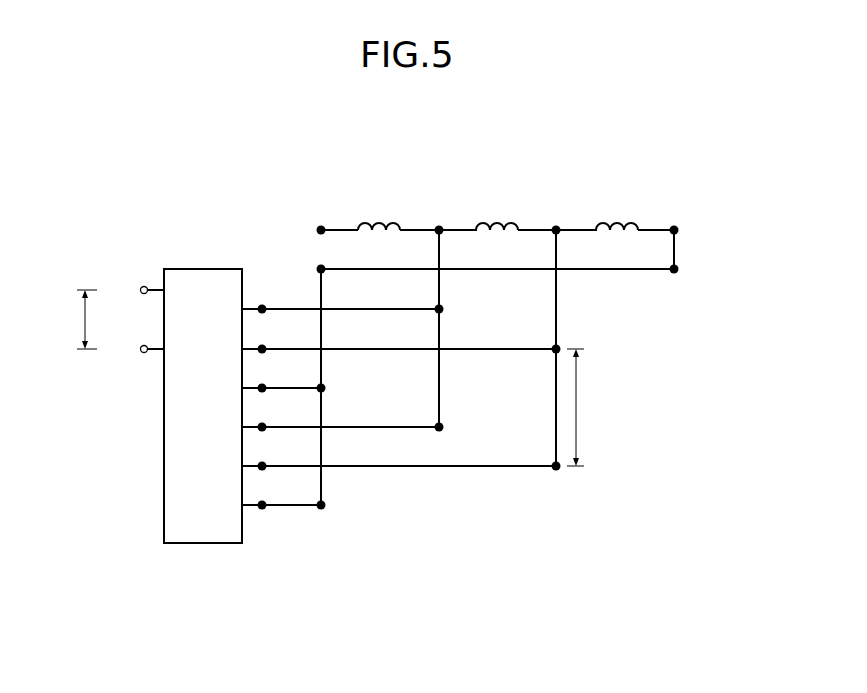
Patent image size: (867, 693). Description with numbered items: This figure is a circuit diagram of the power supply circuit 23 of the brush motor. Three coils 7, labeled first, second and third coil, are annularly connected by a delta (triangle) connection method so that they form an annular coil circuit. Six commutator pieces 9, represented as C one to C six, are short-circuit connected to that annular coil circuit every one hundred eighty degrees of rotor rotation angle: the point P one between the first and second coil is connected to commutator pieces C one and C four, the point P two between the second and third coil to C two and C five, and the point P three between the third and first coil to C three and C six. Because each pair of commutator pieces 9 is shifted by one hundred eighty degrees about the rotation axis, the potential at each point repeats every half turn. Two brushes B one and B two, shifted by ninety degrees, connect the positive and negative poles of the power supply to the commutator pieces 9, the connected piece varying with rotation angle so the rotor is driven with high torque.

The coil 7 is at (675, 208).
The power supply circuit 23 is at (217, 223).
The commutator piece 9 is at (267, 523).